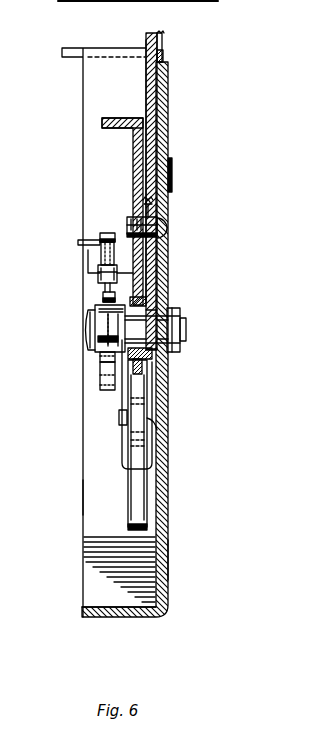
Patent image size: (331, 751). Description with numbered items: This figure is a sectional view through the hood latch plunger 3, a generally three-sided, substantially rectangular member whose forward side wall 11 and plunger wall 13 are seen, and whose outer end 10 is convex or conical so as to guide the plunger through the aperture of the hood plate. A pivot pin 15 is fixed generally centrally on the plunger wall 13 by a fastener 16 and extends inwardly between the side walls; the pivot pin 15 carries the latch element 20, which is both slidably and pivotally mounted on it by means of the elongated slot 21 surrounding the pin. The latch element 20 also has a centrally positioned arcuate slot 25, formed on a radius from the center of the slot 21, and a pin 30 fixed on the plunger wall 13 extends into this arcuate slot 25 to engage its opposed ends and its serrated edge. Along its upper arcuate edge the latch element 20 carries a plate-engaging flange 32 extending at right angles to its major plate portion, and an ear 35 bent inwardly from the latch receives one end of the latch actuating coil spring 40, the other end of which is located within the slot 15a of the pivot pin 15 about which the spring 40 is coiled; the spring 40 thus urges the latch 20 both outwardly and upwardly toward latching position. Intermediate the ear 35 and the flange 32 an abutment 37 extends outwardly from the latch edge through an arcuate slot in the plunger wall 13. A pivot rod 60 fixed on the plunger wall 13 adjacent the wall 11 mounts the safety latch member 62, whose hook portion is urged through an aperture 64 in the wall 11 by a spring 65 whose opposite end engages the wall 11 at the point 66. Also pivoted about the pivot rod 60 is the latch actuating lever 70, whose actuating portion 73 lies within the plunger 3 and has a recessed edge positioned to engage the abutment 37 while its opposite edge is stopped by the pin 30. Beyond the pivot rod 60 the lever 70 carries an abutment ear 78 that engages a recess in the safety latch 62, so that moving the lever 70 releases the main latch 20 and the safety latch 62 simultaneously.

The plunger 3 is at (82, 497).
The plunger outer end 10 is at (102, 617).
The forward side wall 11 is at (84, 458).
The plunger wall 13 is at (169, 88).
The pivot pin 15 is at (185, 329).
The slot in pivot pin 15a is at (97, 342).
The fastener 16 is at (181, 312).
The latch element 20 is at (137, 146).
The slot 21 is at (150, 313).
The arcuate slot 25 is at (149, 215).
The pin 30 is at (168, 227).
The flange 32 is at (105, 118).
The ear 35 is at (92, 252).
The abutment 37 is at (173, 166).
The latch actuating coil spring 40 is at (100, 297).
The pivot rod 60 is at (90, 318).
The safety latch member 62 is at (137, 393).
The aperture 64 is at (122, 510).
The spring 65 is at (143, 298).
The spring engagement point on wall 66 is at (85, 240).
The latch actuating lever 70 is at (162, 39).
The actuating portion 73 is at (147, 77).
The abutment ear 78 is at (118, 418).